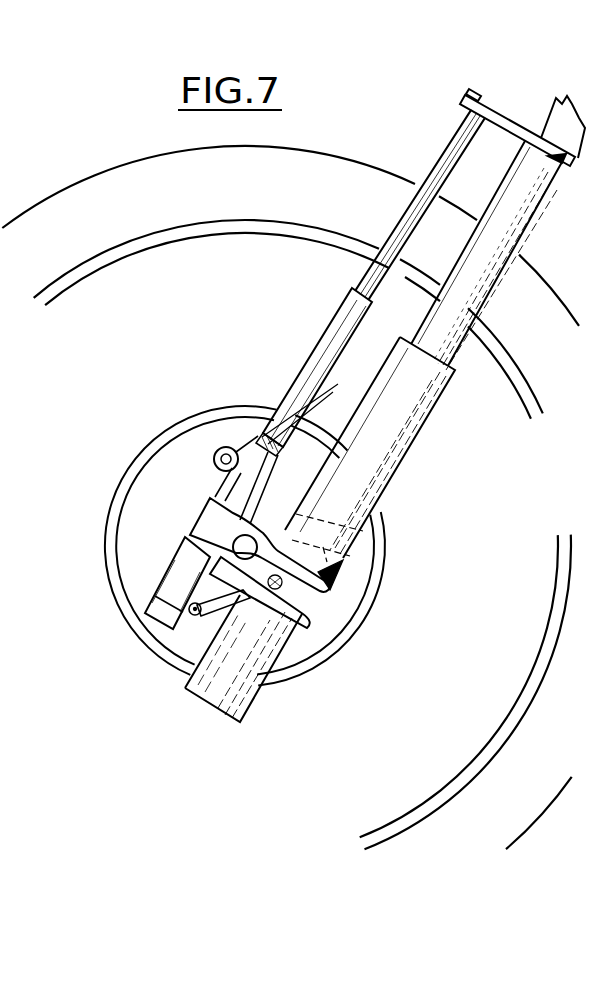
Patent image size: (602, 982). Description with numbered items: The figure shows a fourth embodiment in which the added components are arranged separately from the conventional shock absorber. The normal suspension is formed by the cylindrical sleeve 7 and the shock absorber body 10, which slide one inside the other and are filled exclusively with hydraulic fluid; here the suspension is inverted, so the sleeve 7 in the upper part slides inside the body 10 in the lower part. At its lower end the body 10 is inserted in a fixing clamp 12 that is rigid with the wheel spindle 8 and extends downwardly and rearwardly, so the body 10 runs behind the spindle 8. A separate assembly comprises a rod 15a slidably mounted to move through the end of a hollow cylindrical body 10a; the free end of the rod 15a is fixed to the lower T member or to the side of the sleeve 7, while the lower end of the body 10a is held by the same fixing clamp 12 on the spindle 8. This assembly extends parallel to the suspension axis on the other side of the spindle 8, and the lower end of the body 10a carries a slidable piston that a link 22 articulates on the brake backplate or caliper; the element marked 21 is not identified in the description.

The cylindrical sleeve 7 is at (520, 190).
The rod 15a is at (433, 165).
The hollow cylindrical body 10a is at (337, 340).
The tubular element 10 is at (422, 394).
The spindle 8 is at (218, 510).
The fixing clamp 12 is at (195, 527).
The lower tube 21 is at (143, 620).
The link 22 is at (228, 604).